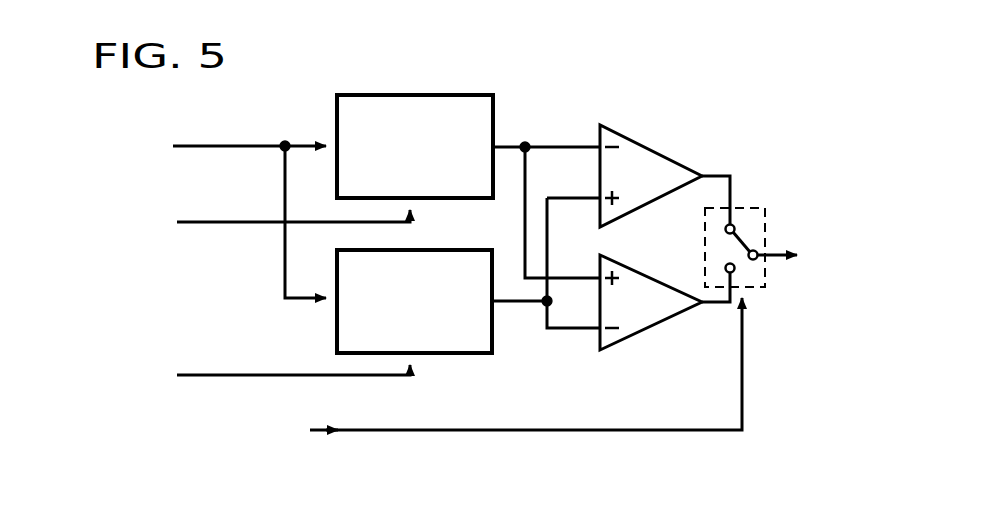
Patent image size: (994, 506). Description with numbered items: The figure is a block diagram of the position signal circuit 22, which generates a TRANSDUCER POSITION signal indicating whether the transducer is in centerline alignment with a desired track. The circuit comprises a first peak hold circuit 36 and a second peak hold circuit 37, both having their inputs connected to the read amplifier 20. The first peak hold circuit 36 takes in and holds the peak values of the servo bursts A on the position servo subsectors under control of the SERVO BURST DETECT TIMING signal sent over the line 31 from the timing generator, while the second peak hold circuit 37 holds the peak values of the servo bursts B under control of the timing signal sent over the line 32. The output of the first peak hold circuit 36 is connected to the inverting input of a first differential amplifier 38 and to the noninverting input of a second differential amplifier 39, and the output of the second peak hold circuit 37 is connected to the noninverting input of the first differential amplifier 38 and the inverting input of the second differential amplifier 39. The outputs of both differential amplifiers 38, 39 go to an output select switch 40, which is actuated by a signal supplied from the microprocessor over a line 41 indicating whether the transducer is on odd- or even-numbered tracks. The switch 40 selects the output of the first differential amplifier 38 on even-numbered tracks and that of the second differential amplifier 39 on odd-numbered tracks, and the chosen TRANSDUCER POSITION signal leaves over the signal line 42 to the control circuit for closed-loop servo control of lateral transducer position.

The read amplifier 20 is at (220, 197).
The position signal circuit 22 is at (600, 96).
The line 31 is at (219, 223).
The line 32 is at (228, 373).
The first peak hold circuit 36 is at (462, 200).
The second peak hold circuit 37 is at (466, 355).
The first differential amplifier 38 is at (658, 152).
The second differential amplifier 39 is at (662, 283).
The output select switch 40 is at (752, 206).
The line 41 is at (387, 428).
The TRANSDUCER POSITION signal line 42 is at (773, 262).